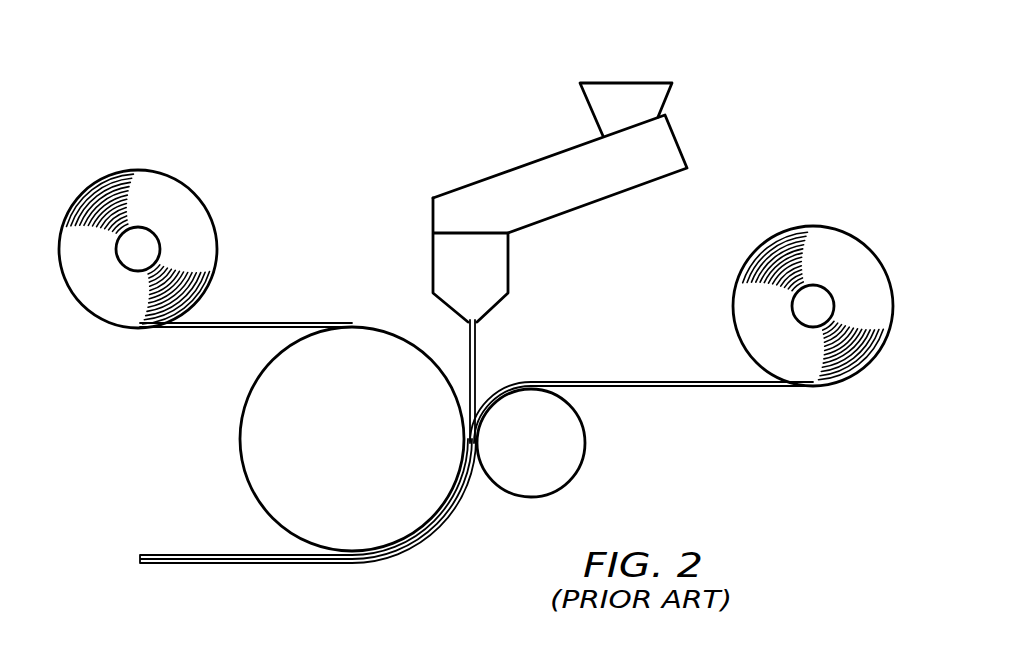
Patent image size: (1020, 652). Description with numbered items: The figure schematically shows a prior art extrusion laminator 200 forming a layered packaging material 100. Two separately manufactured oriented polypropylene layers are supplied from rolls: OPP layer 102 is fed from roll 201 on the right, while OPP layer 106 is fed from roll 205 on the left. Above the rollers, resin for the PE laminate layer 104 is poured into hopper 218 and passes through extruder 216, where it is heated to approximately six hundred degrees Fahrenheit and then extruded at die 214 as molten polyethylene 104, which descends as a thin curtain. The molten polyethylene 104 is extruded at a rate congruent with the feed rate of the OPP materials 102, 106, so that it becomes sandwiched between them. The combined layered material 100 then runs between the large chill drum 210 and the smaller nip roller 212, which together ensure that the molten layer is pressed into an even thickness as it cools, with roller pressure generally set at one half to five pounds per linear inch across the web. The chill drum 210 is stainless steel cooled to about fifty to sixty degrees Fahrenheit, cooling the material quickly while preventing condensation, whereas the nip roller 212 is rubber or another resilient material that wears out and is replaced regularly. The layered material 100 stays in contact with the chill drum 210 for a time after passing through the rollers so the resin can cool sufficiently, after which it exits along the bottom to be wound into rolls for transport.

The extrusion laminator 200 is at (349, 140).
The roll 205 is at (73, 204).
The OPP layer 106 is at (220, 330).
The chill drum 210 is at (241, 456).
The material 100 is at (197, 564).
The PE laminate layer 104 is at (476, 348).
The nip roller 212 is at (582, 461).
The OPP layer 102 is at (717, 388).
The roll 201 is at (853, 237).
The die 214 is at (509, 266).
The extruder 216 is at (681, 150).
The hopper 218 is at (645, 82).